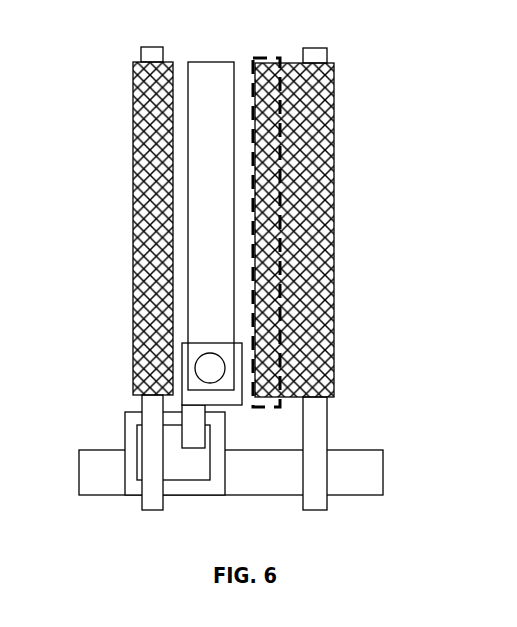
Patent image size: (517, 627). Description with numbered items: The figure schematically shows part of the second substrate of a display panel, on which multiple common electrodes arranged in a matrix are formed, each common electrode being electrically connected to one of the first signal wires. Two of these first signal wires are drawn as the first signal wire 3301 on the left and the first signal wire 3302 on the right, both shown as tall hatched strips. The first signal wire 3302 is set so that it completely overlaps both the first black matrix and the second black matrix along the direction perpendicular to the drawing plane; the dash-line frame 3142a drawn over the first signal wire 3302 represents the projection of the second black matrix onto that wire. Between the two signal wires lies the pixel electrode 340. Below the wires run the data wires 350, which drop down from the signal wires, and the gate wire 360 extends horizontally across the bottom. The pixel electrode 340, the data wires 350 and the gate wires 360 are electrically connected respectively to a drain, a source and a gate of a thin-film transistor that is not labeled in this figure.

The first signal wire 3301 is at (140, 190).
The first signal wire 3302 is at (333, 195).
The pixel electrode 340 is at (195, 77).
The dash-line frame 3142a is at (268, 58).
The data wire 350 is at (155, 406).
The gate wire 360 is at (352, 475).